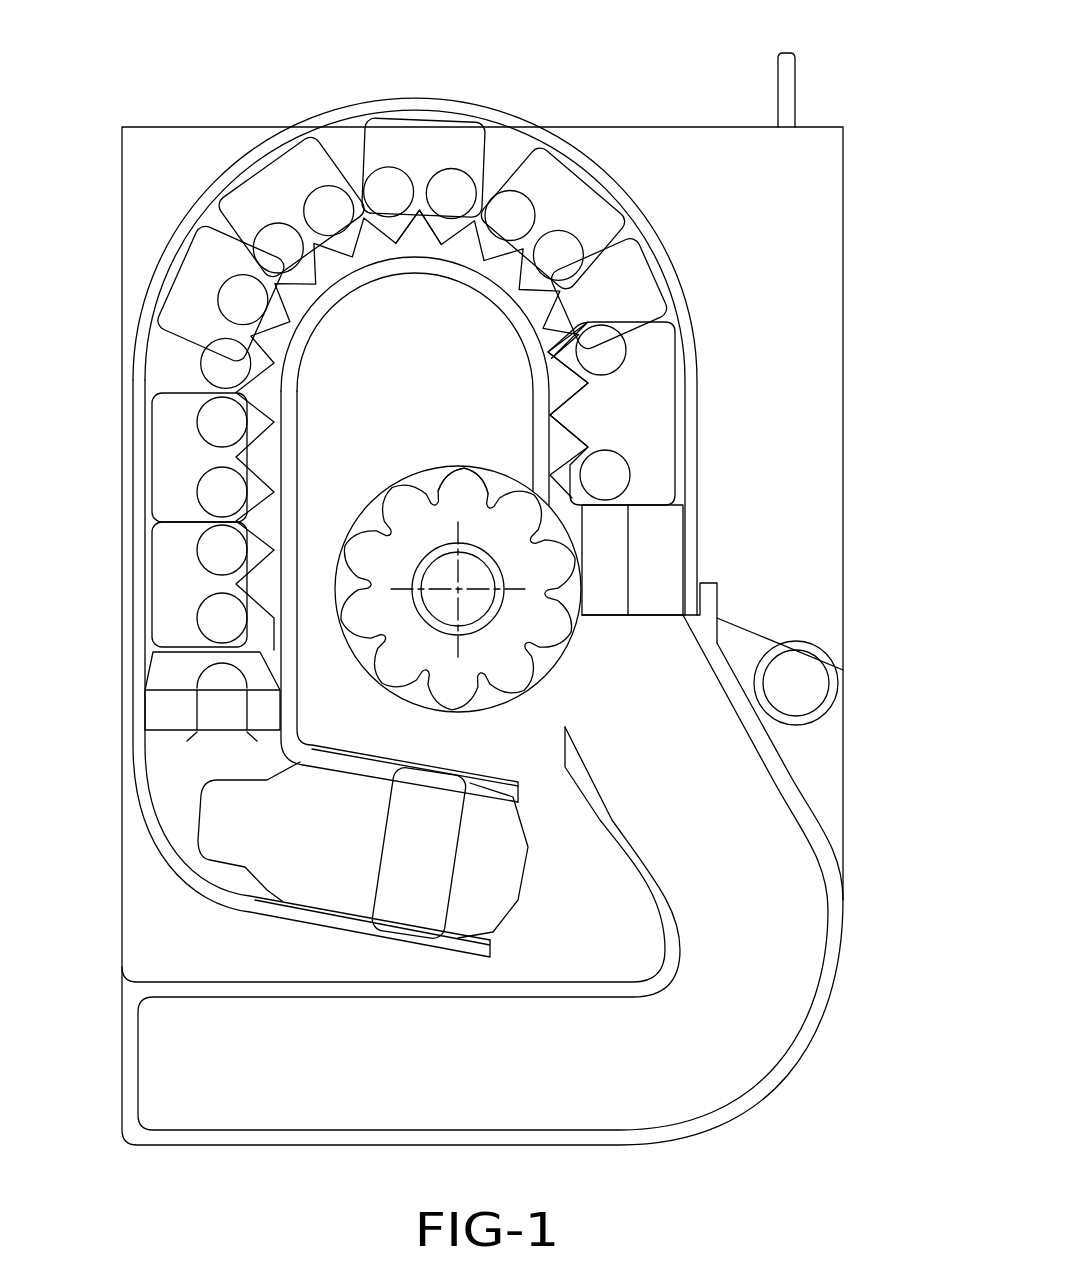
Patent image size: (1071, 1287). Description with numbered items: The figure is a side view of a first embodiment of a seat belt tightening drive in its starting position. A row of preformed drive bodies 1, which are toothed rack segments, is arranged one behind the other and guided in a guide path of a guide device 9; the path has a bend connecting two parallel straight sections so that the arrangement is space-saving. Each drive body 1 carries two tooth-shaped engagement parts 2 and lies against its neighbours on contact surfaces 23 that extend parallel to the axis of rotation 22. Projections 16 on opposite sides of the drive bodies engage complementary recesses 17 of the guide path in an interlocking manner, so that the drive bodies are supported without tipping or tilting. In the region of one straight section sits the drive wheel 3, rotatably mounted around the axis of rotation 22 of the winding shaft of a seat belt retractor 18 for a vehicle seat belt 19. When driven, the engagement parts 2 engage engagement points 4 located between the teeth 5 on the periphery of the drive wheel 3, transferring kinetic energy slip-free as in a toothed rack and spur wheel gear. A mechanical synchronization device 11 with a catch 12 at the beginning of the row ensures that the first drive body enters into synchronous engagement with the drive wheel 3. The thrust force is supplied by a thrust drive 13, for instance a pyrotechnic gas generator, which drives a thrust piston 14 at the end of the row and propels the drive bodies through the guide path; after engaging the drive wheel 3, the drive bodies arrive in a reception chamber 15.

The drive body 1 is at (562, 198).
The tooth-shaped engagement part 2 is at (388, 252).
The drive wheel 3 is at (400, 563).
The engagement point 4 is at (368, 645).
The tooth 5 is at (463, 483).
The guide device 9 is at (200, 213).
The synchronization device 11 is at (653, 443).
The catch 12 is at (582, 507).
The thrust drive 13 is at (320, 883).
The thrust piston 14 is at (170, 703).
The reception chamber 15 is at (344, 1080).
The projection 16 is at (332, 203).
The recess 17 is at (590, 307).
The seat belt retractor 18 is at (667, 147).
The vehicle seat belt 19 is at (787, 97).
The axis of rotation 22 is at (458, 593).
The contact surface 23 is at (337, 143).